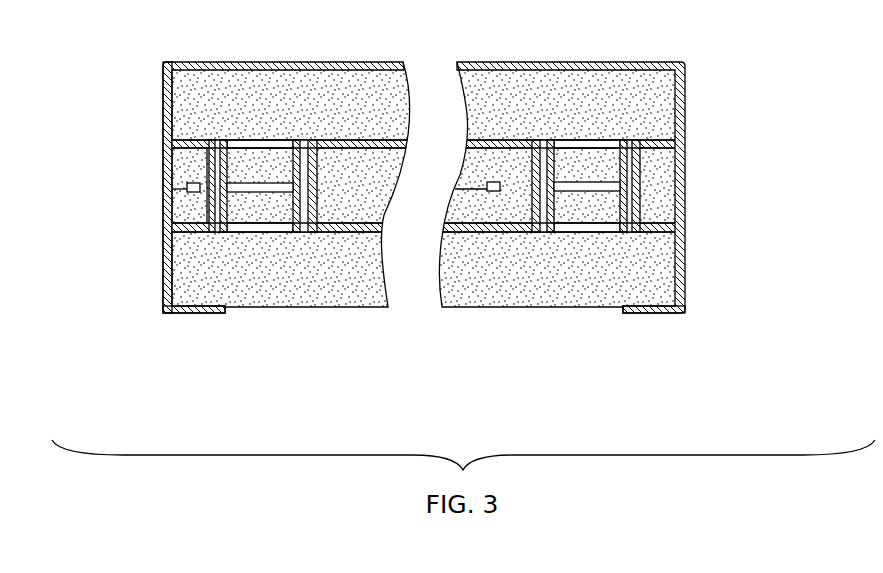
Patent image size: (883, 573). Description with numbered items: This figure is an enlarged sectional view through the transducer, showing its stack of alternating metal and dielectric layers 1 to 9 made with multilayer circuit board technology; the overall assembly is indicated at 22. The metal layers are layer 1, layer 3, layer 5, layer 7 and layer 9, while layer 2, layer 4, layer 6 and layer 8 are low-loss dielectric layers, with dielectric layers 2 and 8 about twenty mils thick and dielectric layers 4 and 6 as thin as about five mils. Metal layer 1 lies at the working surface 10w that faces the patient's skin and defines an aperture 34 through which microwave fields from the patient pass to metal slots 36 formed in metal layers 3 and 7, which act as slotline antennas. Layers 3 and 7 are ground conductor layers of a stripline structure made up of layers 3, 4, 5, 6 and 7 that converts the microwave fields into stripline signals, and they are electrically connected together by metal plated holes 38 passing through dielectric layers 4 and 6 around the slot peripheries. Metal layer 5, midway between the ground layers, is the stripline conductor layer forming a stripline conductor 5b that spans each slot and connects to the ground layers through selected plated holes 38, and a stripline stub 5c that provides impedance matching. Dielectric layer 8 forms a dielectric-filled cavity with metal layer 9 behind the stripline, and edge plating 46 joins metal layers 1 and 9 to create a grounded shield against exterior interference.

The circuit board assembly 22 is at (135, 67).
The edge plating 46 is at (163, 117).
The aperture 34 is at (227, 313).
The metal layer 9 is at (699, 63).
The dielectric layer 8 is at (670, 93).
The metal layer 7 is at (699, 143).
The dielectric layer 6 is at (670, 155).
The metal layer 5 is at (479, 143).
The stripline conductor 5b is at (250, 187).
The stripline stub 5c is at (190, 189).
The dielectric layer 4 is at (670, 215).
The metal layer 3 is at (699, 228).
The dielectric layer 2 is at (670, 277).
The metal layer 1 is at (699, 307).
The metal plated hole 38 is at (222, 143).
The metal slot 36 is at (303, 249).
The working surface 10w is at (263, 360).